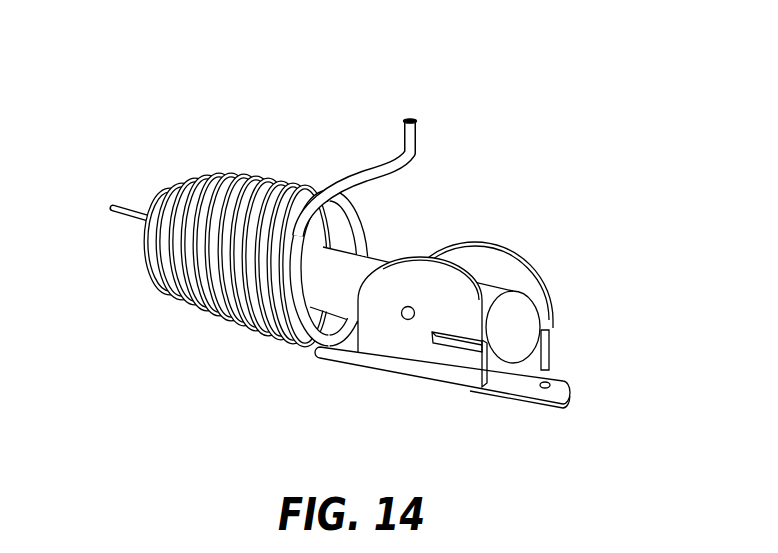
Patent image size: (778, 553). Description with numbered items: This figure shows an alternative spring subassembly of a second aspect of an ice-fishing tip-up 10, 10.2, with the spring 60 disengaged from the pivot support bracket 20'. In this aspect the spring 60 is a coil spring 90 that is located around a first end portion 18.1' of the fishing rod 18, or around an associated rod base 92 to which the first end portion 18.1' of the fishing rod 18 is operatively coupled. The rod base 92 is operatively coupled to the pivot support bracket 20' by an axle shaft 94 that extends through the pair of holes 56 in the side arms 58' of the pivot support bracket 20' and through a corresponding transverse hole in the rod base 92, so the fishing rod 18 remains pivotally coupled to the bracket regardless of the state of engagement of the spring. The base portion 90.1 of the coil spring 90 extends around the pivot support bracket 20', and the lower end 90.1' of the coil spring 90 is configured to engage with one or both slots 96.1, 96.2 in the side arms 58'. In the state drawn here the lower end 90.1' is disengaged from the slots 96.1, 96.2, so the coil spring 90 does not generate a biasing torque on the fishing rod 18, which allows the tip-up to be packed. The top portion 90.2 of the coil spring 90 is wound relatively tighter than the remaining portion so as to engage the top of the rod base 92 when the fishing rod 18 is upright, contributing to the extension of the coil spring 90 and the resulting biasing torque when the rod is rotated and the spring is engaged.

The ice-fishing tip-up 10 is at (546, 54).
The second aspect of ice-fishing tip-up 10.2 is at (340, 265).
The fishing rod 18 is at (123, 207).
The first end portion of the fishing rod 18.1' is at (130, 214).
The spring 60 is at (292, 184).
The coil spring 90 is at (260, 181).
The top portion of the coil spring 90.2 is at (129, 284).
The base portion of the coil spring 90.1 is at (303, 315).
The lower end of the coil spring 90.1' is at (399, 177).
The rod base 92 is at (384, 256).
The holes 56 is at (400, 260).
The side arms 58' is at (449, 314).
The axle shaft 94 is at (408, 313).
The slot 96.1 is at (541, 327).
The slot 96.2 is at (449, 351).
The pivot support bracket 20' is at (456, 357).